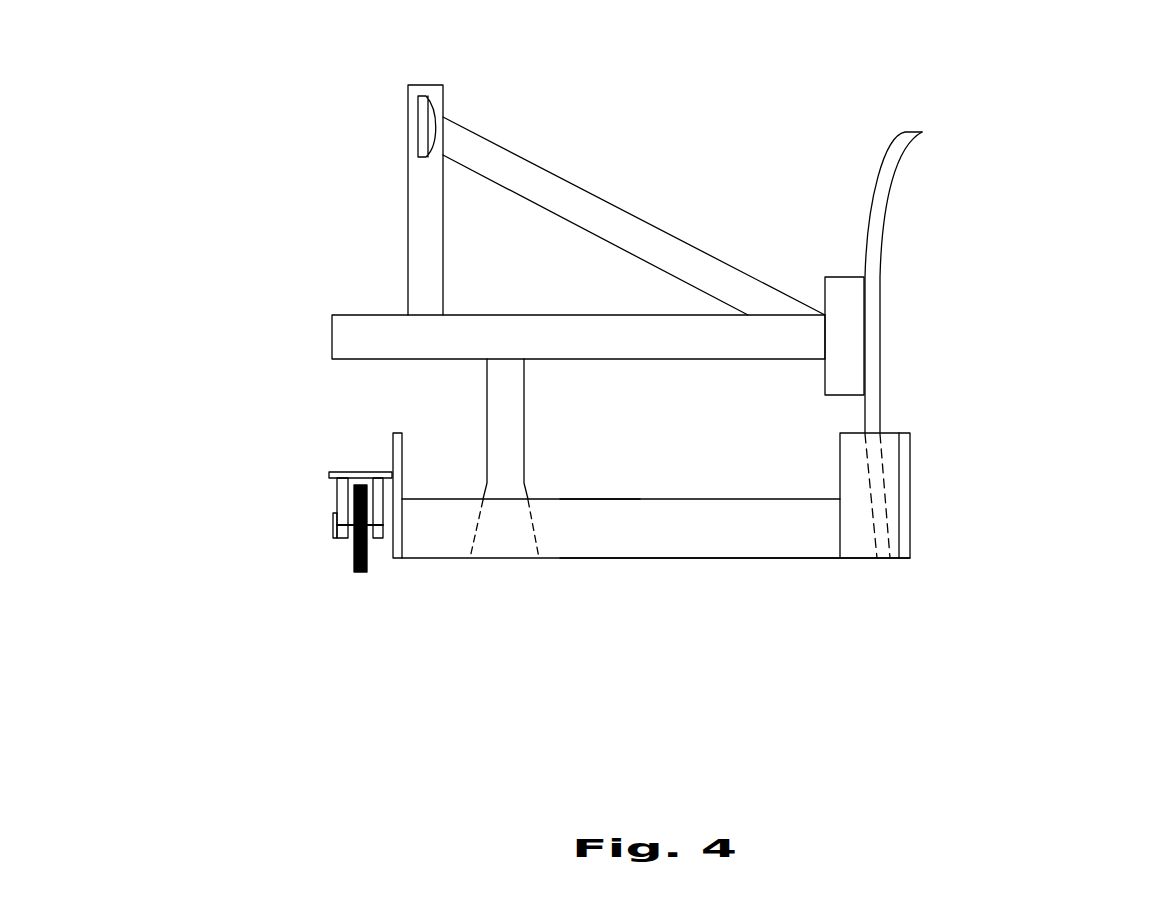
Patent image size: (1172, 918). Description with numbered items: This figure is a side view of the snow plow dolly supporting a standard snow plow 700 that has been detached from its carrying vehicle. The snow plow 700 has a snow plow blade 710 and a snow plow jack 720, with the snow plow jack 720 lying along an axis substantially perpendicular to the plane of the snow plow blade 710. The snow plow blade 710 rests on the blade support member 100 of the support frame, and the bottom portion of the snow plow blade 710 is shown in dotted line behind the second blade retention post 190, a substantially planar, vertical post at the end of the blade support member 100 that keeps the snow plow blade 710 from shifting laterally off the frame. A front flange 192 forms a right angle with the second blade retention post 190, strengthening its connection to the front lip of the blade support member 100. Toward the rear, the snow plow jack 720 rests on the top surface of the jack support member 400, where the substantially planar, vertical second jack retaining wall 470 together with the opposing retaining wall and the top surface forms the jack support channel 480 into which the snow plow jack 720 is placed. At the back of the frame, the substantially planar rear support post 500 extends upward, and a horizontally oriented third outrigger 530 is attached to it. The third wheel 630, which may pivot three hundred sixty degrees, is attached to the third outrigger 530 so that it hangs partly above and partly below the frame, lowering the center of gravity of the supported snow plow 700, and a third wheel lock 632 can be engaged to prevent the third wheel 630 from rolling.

The blade support member 100 is at (912, 440).
The second blade retention post 190 is at (852, 548).
The front flange 192 is at (905, 516).
The jack support member 400 is at (733, 560).
The second jack retaining wall 470 is at (667, 540).
The jack support channel 480 is at (600, 542).
The rear support post 500 is at (398, 455).
The third outrigger 530 is at (333, 477).
The third wheel 630 is at (353, 563).
The third wheel lock 632 is at (333, 522).
The snow plow 700 is at (678, 219).
The snow plow blade 710 is at (875, 348).
The snow plow jack 720 is at (498, 409).